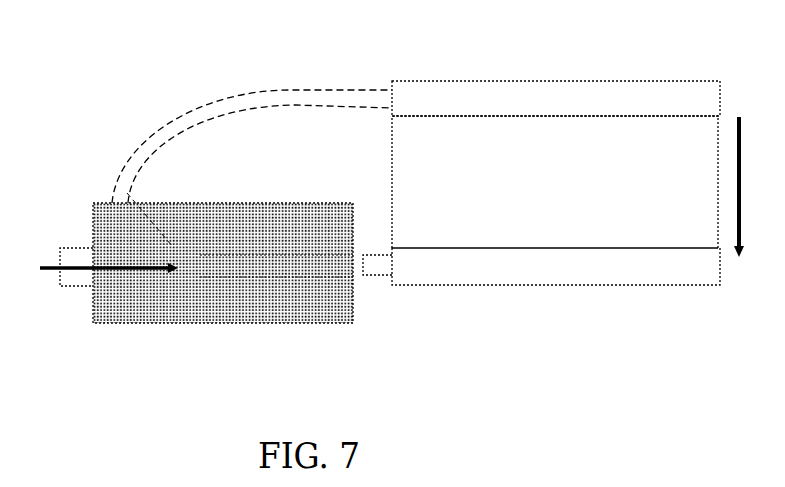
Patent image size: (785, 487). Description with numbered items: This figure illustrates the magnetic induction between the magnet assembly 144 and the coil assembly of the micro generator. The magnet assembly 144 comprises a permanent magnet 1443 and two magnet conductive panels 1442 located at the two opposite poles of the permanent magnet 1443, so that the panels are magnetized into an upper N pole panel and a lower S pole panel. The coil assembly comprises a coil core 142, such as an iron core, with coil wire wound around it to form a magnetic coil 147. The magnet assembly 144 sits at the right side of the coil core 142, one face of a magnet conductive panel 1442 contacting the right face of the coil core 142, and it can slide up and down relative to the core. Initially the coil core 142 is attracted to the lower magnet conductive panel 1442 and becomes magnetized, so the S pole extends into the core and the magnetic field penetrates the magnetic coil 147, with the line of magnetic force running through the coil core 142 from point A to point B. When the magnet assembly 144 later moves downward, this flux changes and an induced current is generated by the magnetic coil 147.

The coil core 142 is at (75, 247).
The magnetic coil 147 is at (253, 200).
The magnet assembly 144 is at (532, 199).
The magnet conductive panel 1442 is at (585, 93).
The permanent magnet 1443 is at (423, 168).